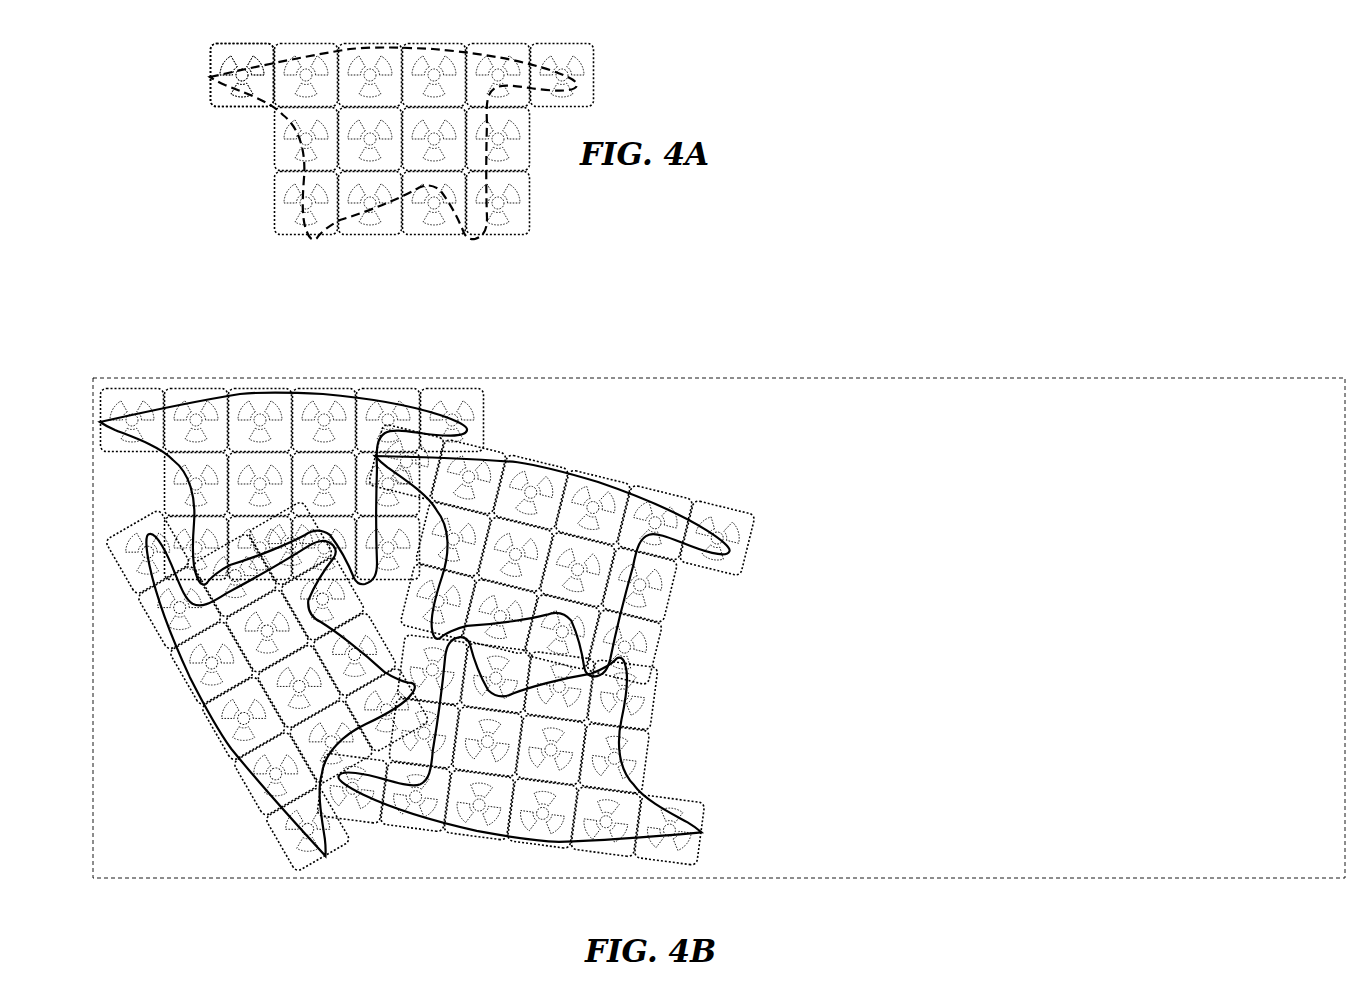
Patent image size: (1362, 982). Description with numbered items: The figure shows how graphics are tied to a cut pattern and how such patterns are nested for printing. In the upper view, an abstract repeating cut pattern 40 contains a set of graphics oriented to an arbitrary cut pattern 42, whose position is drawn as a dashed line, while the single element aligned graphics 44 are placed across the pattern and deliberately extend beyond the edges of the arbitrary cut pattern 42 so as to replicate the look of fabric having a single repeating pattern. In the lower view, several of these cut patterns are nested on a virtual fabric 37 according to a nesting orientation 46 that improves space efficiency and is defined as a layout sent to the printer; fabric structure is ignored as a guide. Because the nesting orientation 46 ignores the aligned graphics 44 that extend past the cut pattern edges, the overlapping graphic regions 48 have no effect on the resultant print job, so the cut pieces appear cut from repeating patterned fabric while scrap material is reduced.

In FIG. 4A, the abstract repeating cut pattern 40 is at (356, 151).
In FIG. 4A, the arbitrary cut pattern 42 is at (487, 172).
In FIG. 4A, the aligned graphics 44 is at (208, 97).
In FIG. 4B, the virtual fabric 37 is at (791, 378).
In FIG. 4B, the nesting orientation 46 is at (438, 627).
In FIG. 4B, the overlapping graphic regions 48 is at (335, 803).